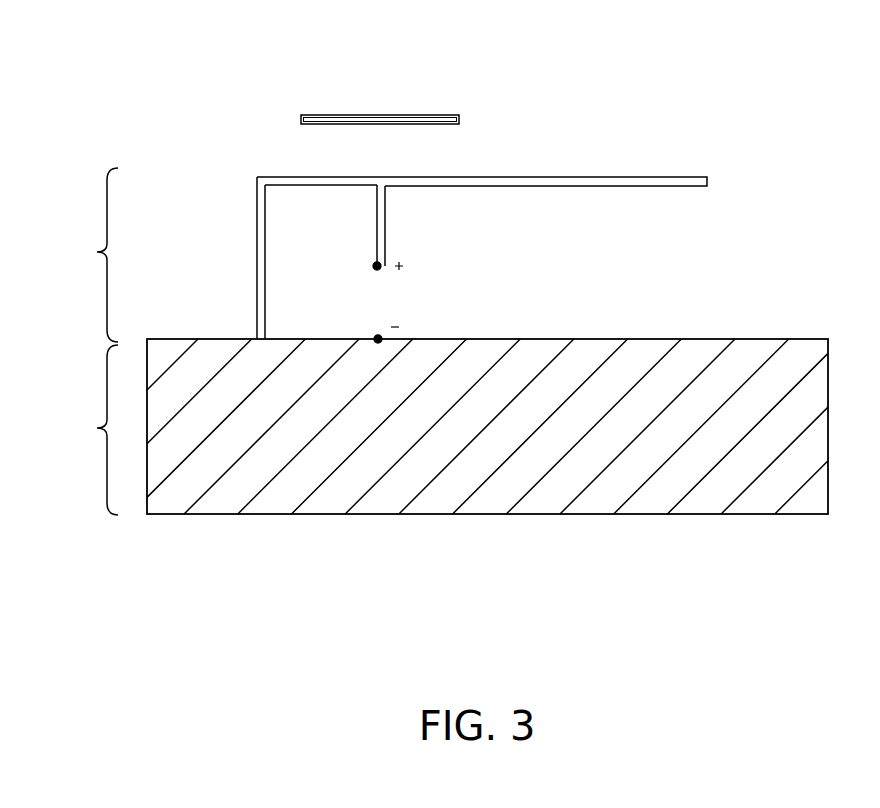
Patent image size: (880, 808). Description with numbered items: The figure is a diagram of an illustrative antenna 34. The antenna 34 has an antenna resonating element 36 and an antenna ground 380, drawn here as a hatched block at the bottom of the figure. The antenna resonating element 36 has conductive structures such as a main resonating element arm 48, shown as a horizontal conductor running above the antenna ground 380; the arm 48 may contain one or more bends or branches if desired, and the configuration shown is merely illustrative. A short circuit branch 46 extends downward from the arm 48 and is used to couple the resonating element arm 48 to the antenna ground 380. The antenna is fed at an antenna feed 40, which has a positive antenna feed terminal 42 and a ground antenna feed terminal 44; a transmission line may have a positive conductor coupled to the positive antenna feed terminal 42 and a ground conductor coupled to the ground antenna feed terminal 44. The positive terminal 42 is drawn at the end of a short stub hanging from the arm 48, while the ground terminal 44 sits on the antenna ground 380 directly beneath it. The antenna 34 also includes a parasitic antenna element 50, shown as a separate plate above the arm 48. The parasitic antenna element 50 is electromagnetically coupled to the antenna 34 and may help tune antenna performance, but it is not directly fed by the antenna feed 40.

The antenna 34 is at (768, 41).
The parasitic antenna element 50 is at (372, 115).
The antenna feed 40 is at (425, 234).
The main resonating element arm 48 is at (570, 177).
The short circuit branch 46 is at (257, 266).
The positive antenna feed terminal 42 is at (373, 266).
The ground antenna feed terminal 44 is at (378, 335).
The antenna resonating element 36 is at (89, 255).
The antenna ground 380 is at (435, 427).